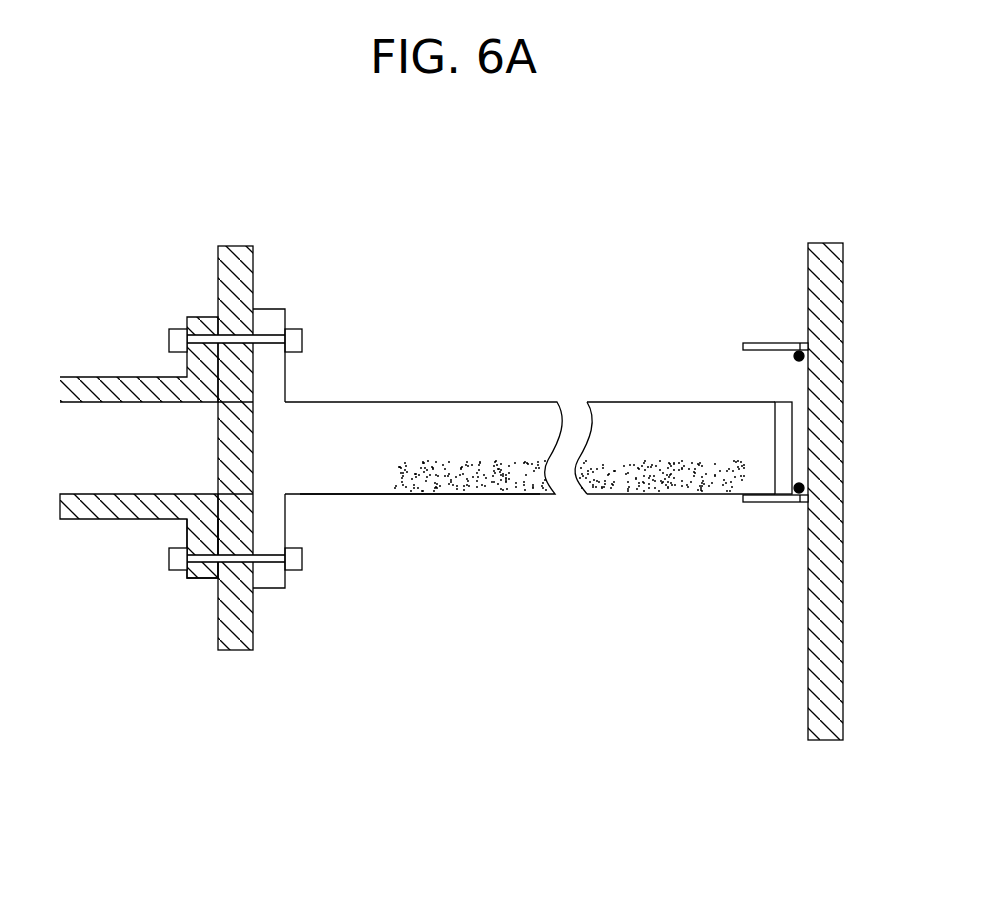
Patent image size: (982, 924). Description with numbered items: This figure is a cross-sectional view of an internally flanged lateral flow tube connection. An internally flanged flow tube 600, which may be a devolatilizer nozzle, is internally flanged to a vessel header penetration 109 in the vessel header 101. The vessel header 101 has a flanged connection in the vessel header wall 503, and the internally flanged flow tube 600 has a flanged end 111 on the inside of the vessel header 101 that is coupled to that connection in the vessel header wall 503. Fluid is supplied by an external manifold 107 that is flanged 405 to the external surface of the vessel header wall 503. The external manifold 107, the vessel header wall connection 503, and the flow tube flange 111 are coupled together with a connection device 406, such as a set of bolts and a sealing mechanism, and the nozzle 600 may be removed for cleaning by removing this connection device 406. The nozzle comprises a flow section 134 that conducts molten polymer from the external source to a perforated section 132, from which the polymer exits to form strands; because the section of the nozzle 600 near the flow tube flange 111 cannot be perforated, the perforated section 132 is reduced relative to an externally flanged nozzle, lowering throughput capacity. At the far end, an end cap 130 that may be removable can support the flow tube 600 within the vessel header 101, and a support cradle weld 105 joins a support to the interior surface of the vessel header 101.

The vessel header 101 is at (254, 252).
The support cradle weld 105 is at (798, 343).
The external manifold 107 is at (100, 377).
The vessel header penetration 109 is at (237, 494).
The flanged end 111 is at (287, 520).
The end cap 130 is at (783, 402).
The perforated section 132 is at (660, 477).
The flow section 134 is at (330, 477).
The flange 405 is at (197, 577).
The connection device 406 is at (170, 567).
The vessel header wall 503 is at (237, 402).
The internally flanged flow tube 600 is at (715, 402).